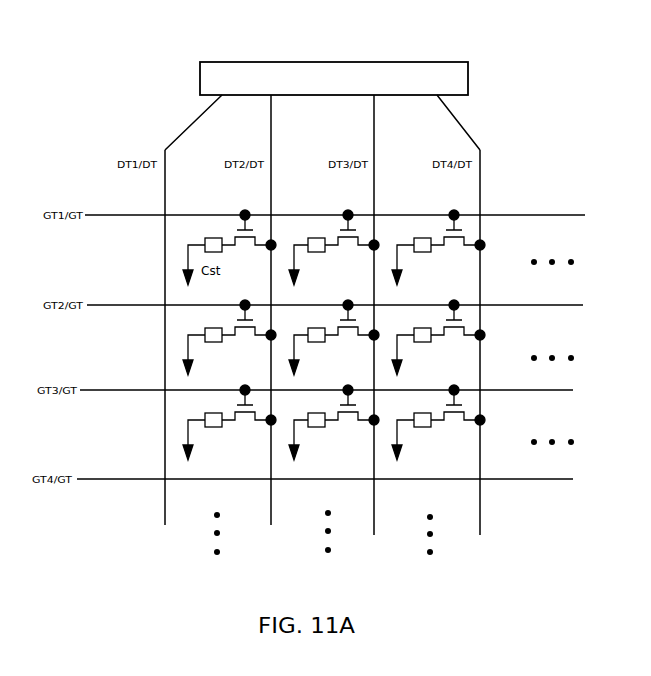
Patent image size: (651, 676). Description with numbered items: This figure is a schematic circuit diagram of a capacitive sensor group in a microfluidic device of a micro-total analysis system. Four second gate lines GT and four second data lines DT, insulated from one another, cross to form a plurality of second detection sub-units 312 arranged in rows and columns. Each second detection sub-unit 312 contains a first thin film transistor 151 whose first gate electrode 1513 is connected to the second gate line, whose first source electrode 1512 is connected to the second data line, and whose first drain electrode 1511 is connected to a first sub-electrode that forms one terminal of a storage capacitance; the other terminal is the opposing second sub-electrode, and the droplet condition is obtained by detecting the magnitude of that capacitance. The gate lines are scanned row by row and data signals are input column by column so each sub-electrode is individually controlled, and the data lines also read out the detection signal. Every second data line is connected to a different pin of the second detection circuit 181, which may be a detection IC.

The second detection circuit 181 is at (367, 72).
The first thin film transistor 151 is at (246, 240).
The first gate electrode 1513 is at (438, 222).
The first source electrode 1512 is at (497, 250).
The first drain electrode 1511 is at (433, 256).
The second detection sub-unit 312 is at (182, 463).